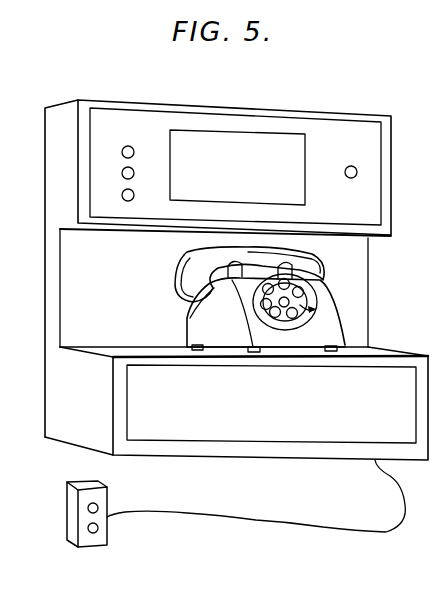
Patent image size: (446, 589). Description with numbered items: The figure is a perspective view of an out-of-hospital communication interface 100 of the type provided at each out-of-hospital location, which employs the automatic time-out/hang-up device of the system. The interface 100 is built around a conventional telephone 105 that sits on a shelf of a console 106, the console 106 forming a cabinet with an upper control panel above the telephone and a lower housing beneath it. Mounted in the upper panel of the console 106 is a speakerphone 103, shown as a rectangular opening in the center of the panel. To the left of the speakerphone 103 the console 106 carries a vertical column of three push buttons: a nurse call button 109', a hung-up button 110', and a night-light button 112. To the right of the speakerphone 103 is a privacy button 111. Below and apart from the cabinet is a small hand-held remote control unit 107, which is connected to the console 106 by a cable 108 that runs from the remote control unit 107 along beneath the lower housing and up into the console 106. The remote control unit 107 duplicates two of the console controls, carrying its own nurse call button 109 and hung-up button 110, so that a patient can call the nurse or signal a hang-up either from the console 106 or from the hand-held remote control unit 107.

The communication interface 100 is at (236, 267).
The speakerphone 103 is at (249, 179).
The telephone 105 is at (205, 328).
The console 106 is at (352, 106).
The hand-held remote control unit 107 is at (94, 523).
The cable 108 is at (333, 528).
The nurse call button 109 is at (121, 494).
The nurse call button 109' is at (120, 136).
The hung-up button 110 is at (122, 539).
The hung-up button 110' is at (90, 167).
The privacy button 111 is at (353, 178).
The night-light button 112 is at (125, 200).